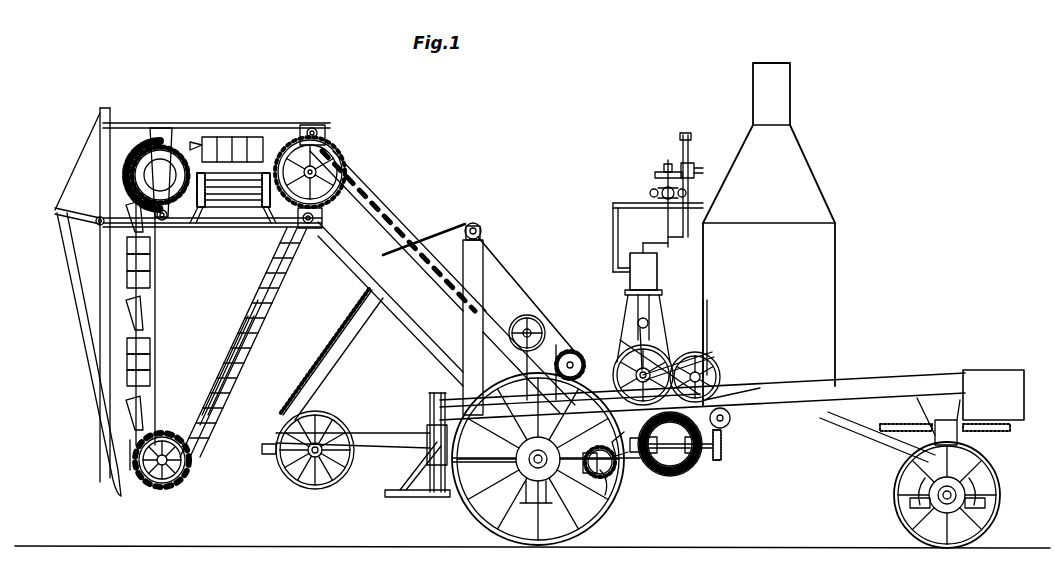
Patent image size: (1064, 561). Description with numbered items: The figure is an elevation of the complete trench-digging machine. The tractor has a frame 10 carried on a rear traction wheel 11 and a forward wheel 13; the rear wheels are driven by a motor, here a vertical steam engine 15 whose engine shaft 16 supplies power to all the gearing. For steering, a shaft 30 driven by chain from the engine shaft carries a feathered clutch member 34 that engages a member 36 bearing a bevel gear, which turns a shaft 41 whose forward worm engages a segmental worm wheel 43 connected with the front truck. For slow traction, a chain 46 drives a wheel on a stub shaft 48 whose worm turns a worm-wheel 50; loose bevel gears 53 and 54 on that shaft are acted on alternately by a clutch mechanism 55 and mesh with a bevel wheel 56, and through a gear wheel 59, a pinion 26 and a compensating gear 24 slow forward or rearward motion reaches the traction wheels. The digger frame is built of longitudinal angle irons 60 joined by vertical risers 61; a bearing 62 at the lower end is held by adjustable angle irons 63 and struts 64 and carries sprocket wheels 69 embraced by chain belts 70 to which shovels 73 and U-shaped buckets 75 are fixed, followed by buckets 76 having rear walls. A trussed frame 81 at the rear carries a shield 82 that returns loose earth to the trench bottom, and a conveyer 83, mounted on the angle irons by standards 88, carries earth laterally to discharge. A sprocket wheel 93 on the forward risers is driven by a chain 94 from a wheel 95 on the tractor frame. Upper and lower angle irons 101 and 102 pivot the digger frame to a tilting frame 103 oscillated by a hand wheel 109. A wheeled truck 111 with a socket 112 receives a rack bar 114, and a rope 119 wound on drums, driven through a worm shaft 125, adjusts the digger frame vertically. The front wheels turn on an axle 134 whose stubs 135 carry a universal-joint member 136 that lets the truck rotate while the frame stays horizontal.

The frame of the tractor 10 is at (702, 389).
The rear wheel 11 is at (606, 512).
The forward wheel 13 is at (897, 497).
The vertical steam engine 15 is at (658, 270).
The engine shaft 16 is at (638, 372).
The compensating gear 24 is at (599, 470).
The pinion 26 is at (536, 459).
The steering shaft 30 is at (735, 380).
The clutch member 34 is at (703, 372).
The clutch-engaged member 36 is at (707, 337).
The worm shaft 41 is at (800, 405).
The segmental worm wheel 43 is at (1010, 427).
The chain 46 is at (700, 358).
The stub shaft 48 is at (732, 418).
The worm-wheel 50 is at (724, 446).
The bevel gear wheel 53 is at (690, 465).
The bevel gear wheel 54 is at (640, 478).
The clutch mechanism 55 is at (670, 470).
The bevel wheel 56 is at (652, 462).
The gear wheel 59 is at (612, 495).
The longitudinal angle iron 60 is at (124, 123).
The vertical riser 61 is at (163, 140).
The bearing 62 is at (163, 438).
The angle iron 63 is at (165, 340).
The strut 64 is at (263, 290).
The sprocket wheel 69 is at (160, 433).
The chain belt 70 is at (225, 389).
The shovel 73 is at (222, 405).
The bucket 75 is at (257, 335).
The bucket with rear wall 76 is at (237, 373).
The trussed frame 81 is at (82, 340).
The follower or shield 82 is at (100, 272).
The conveyer 83 is at (243, 202).
The standard 88 is at (274, 228).
The sprocket wheel 93 is at (340, 160).
The chain 94 is at (375, 226).
The wheel 95 is at (492, 445).
The upper angle irons 101 is at (420, 240).
The lower angle irons 102 is at (412, 332).
The tilting frame 103 is at (556, 345).
The hand wheel 109 is at (520, 348).
The wheeled truck 111 is at (365, 440).
The socket 112 is at (275, 449).
The rack bar 114 is at (310, 372).
The rope or cable 119 is at (535, 318).
The worm shaft 125 is at (568, 352).
The front axle 134 is at (965, 490).
The stub 135 is at (905, 522).
The universal-joint member 136 is at (915, 480).